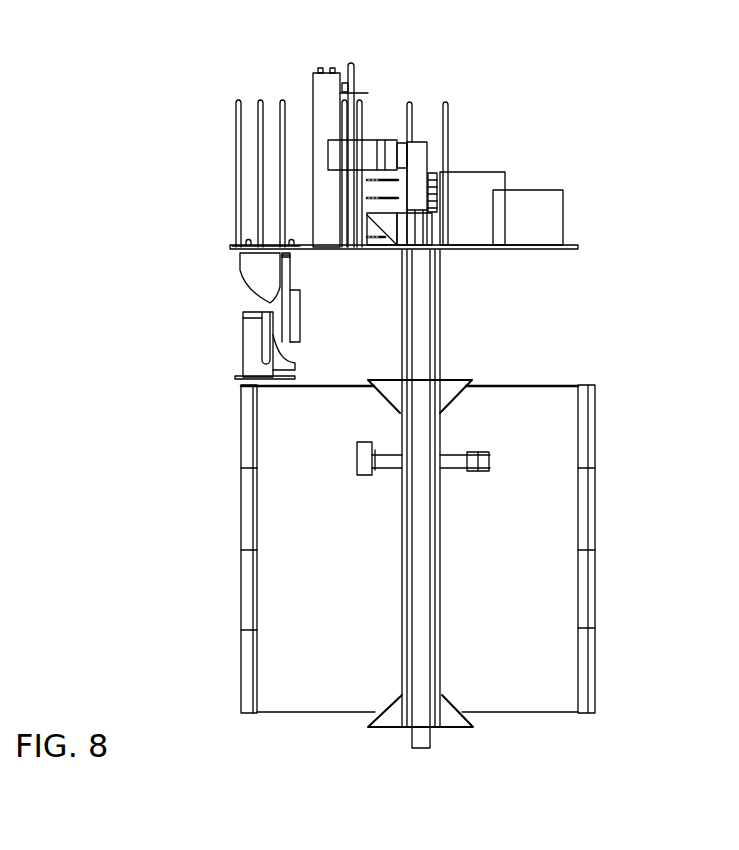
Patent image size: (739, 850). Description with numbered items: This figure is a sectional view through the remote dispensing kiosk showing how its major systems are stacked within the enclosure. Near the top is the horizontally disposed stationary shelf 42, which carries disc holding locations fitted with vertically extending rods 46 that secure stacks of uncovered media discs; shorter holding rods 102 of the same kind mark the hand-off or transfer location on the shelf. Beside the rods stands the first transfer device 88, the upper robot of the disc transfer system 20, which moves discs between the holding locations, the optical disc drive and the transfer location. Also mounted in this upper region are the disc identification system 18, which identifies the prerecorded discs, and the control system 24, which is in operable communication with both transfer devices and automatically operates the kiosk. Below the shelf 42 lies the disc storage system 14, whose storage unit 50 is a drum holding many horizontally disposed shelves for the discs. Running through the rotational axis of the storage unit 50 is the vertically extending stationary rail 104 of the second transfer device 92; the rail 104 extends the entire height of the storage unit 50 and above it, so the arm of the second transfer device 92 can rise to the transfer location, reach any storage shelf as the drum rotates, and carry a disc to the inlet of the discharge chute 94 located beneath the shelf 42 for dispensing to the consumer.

The disc storage system 14 is at (597, 545).
The disc identification system 18 is at (486, 172).
The disc transfer system 20 is at (444, 322).
The control system 24 is at (560, 186).
The shelf 42 is at (579, 250).
The rods 46 is at (236, 170).
The storage unit 50 is at (598, 495).
The first transfer device 88 is at (312, 110).
The second transfer device 92 is at (444, 345).
The discharge chute 94 is at (250, 287).
The holding rods 102 is at (237, 231).
The rail 104 is at (442, 295).